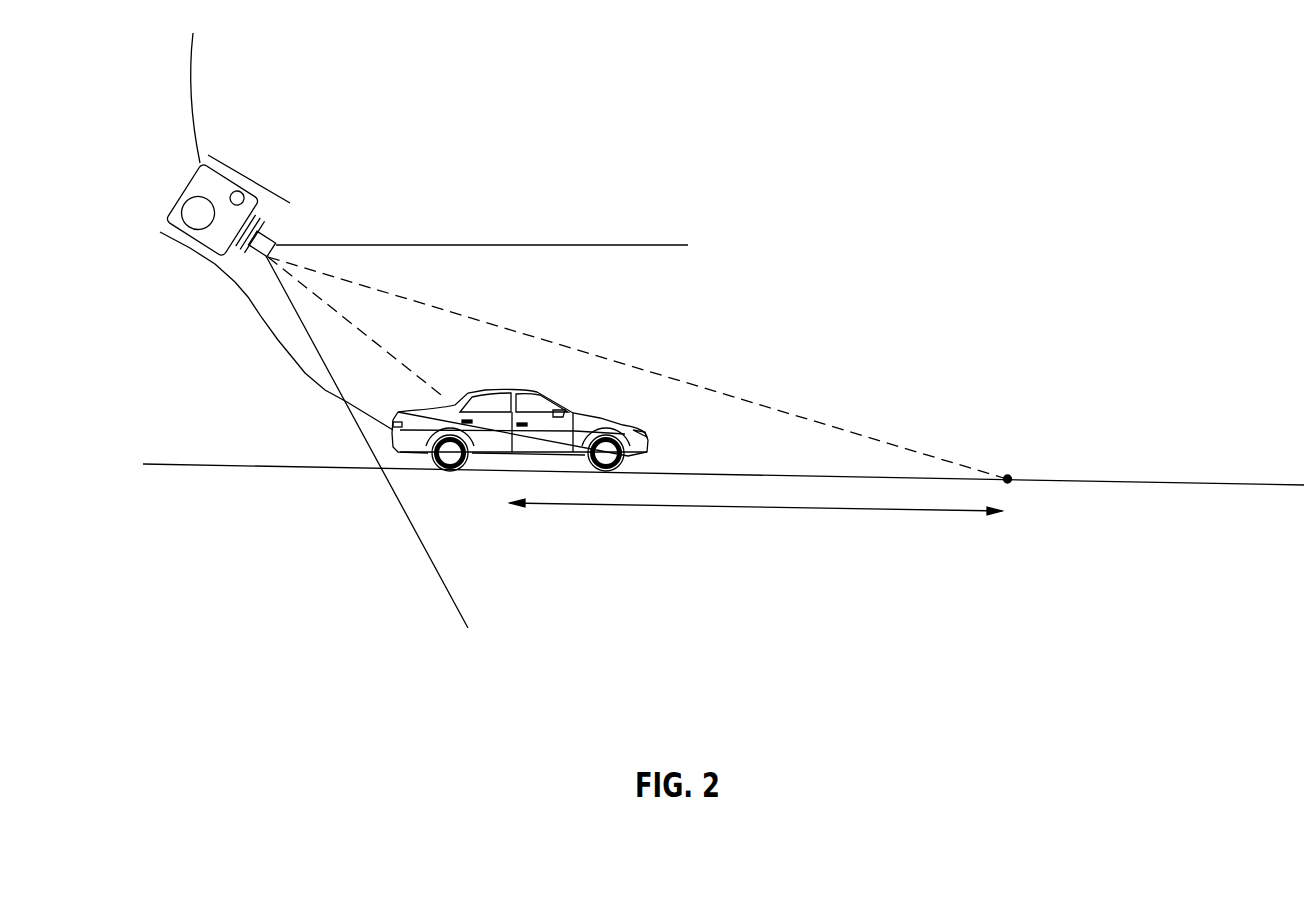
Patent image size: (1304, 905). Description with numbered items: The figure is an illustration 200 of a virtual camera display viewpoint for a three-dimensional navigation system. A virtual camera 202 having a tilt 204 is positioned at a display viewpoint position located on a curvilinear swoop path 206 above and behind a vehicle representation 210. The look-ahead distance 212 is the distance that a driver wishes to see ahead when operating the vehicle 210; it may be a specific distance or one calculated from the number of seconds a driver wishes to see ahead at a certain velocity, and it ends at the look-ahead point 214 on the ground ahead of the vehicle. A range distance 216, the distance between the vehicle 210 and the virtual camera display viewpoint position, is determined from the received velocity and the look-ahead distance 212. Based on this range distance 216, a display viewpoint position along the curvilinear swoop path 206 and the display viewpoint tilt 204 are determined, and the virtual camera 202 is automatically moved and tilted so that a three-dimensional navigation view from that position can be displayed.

The environment / system 200 is at (1239, 120).
The virtual camera 202 is at (193, 195).
The tilt 204 is at (252, 178).
The curvilinear swoop path 206 is at (250, 297).
The vehicle representation 210 is at (490, 389).
The look-ahead distance 212 is at (837, 509).
The look-ahead point 214 is at (1008, 477).
The range distance 216 is at (637, 368).